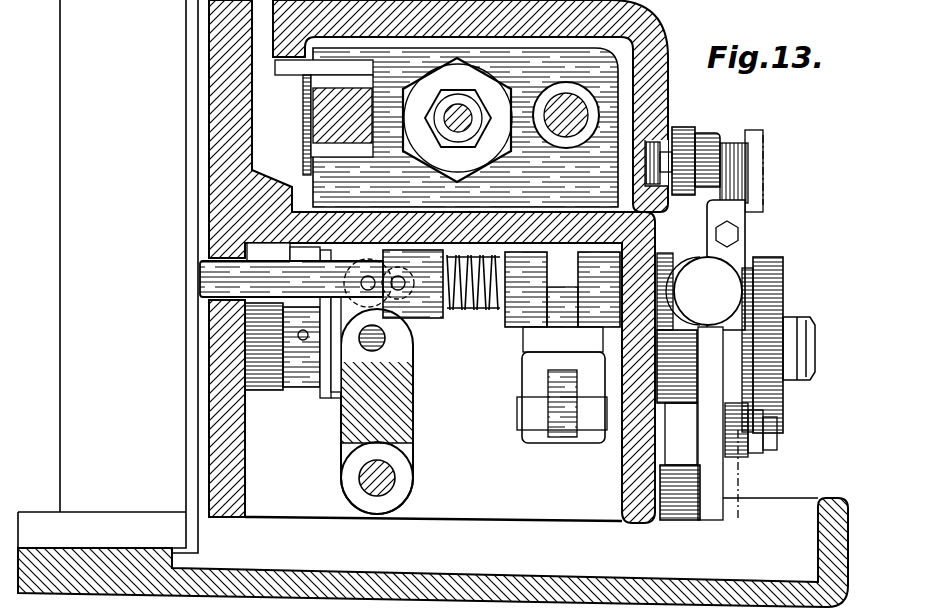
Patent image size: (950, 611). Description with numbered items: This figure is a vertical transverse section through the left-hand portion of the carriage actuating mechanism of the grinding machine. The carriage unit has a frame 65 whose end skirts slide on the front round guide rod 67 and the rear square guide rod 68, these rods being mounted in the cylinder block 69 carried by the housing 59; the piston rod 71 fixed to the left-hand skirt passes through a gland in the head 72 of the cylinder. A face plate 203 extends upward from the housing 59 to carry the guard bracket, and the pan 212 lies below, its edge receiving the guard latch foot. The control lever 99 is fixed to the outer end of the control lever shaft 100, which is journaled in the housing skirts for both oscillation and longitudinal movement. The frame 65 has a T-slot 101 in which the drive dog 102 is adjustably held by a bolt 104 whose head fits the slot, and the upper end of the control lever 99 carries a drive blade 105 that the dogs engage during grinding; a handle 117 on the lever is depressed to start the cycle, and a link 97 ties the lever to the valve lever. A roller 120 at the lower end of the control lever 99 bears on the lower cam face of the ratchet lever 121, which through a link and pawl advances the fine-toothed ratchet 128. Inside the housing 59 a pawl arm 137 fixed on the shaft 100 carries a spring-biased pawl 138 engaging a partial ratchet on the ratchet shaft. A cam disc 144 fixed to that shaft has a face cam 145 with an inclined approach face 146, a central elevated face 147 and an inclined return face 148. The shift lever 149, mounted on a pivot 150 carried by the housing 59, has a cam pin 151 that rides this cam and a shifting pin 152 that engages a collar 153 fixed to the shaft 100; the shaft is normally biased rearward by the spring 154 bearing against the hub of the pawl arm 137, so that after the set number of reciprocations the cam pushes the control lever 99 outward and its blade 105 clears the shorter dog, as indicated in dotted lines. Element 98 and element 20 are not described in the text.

The mounting plate 20 is at (73, 433).
The housing 59 is at (238, 498).
The frame 65 is at (413, 25).
The front round guide rod 67 is at (560, 106).
The rear square guide rod 68 is at (345, 140).
The cylinder block 69 is at (465, 127).
The piston rod 71 is at (453, 130).
The head 72 is at (478, 158).
The link 97 is at (746, 456).
The washer 98 is at (762, 444).
The control lever 99 is at (732, 255).
The control lever shaft 100 is at (213, 273).
The slot 101 is at (645, 150).
The drive dog 102 is at (680, 138).
The bolt 104 is at (706, 147).
The drive blade 105 is at (757, 160).
The handle 117 is at (704, 291).
The roller 120 is at (678, 518).
The ratchet lever 121 is at (670, 417).
The ratchet 128 is at (786, 264).
The pawl arm 137 is at (513, 316).
The pawl 138 is at (560, 441).
The cam disc 144 is at (322, 398).
The face cam 145 is at (340, 411).
The inclined approach face 146 is at (396, 372).
The central elevated face 147 is at (368, 376).
The inclined return face 148 is at (377, 411).
The shift lever 149 is at (345, 444).
The pivot 150 is at (395, 476).
The cam pin 151 is at (398, 340).
The shifting pin 152 is at (399, 283).
The collar 153 is at (432, 321).
The spring 154 is at (503, 277).
The face plate 203 is at (238, 108).
The pan 212 is at (433, 552).